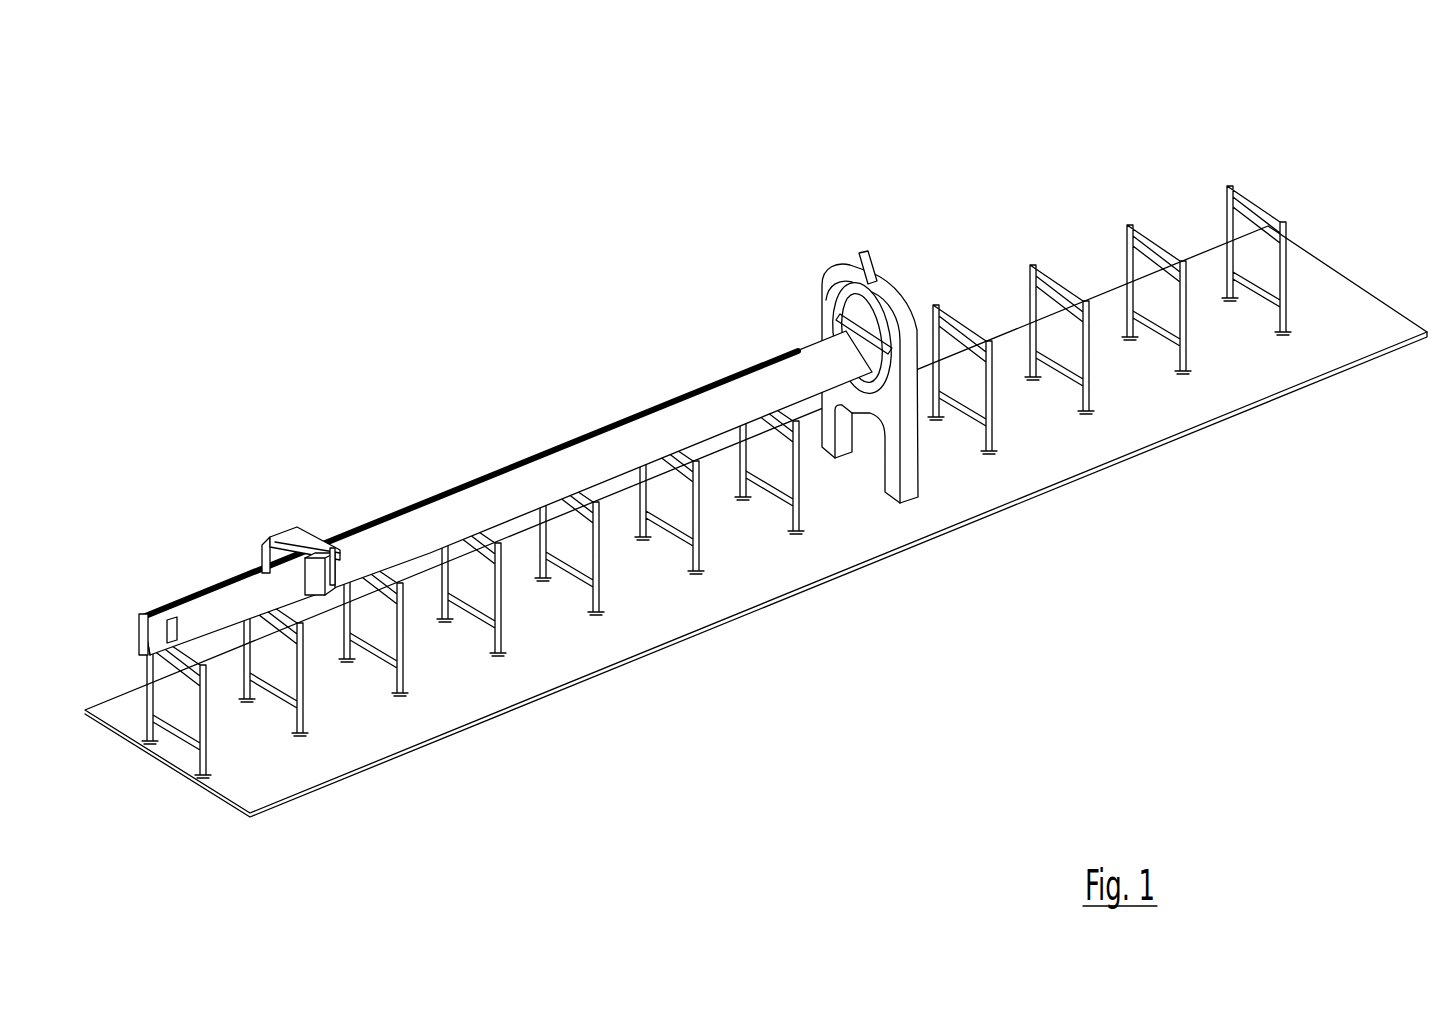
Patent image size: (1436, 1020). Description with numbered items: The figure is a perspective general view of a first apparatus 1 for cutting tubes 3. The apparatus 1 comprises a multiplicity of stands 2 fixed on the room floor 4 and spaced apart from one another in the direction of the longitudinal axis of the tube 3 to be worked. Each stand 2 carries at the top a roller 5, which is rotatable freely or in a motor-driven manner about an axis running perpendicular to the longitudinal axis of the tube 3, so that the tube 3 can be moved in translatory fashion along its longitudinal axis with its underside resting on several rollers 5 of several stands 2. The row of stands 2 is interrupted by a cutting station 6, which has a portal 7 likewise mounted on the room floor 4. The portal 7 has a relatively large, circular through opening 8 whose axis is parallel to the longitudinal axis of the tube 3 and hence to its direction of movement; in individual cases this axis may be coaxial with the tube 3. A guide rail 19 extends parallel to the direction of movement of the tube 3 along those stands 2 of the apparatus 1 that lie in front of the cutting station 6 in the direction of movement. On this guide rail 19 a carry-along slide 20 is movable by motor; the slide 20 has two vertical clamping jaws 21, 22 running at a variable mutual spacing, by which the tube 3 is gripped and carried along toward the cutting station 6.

The apparatus 1 is at (320, 228).
The stands 2 is at (208, 733).
The tube 3 is at (588, 452).
The room floor 4 is at (1333, 323).
The roller 5 is at (192, 650).
The cutting station 6 is at (815, 245).
The portal 7 is at (890, 296).
The through opening 8 is at (824, 270).
The guide rail 19 is at (238, 594).
The carry-along slide 20 is at (328, 556).
The clamping jaw 21 is at (343, 572).
The clamping jaw 22 is at (273, 540).